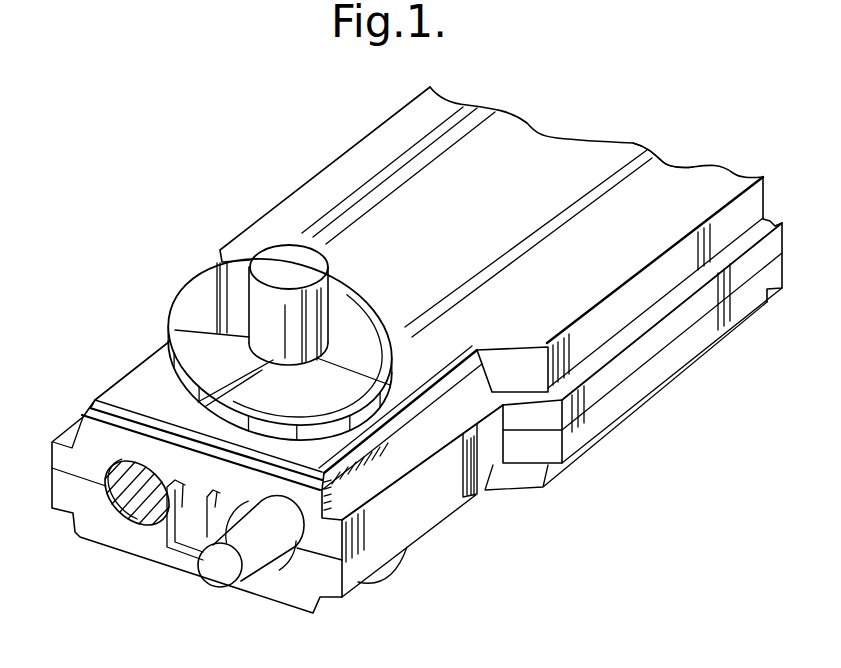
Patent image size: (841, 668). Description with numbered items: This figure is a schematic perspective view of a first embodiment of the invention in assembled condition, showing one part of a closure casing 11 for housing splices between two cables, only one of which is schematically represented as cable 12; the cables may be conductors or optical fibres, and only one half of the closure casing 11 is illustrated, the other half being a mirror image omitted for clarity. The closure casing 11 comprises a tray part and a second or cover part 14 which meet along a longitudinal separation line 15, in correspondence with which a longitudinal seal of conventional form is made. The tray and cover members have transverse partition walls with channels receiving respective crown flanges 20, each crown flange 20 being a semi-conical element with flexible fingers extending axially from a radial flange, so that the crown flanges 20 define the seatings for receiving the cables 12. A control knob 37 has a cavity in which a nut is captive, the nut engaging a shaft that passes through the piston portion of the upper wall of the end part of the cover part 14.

The closure casing 11 is at (270, 205).
The cable 12 is at (257, 560).
The cover part 14 is at (660, 162).
The longitudinal separation line 15 is at (587, 407).
The crown flange 20 is at (125, 503).
The control knob 37 is at (203, 297).